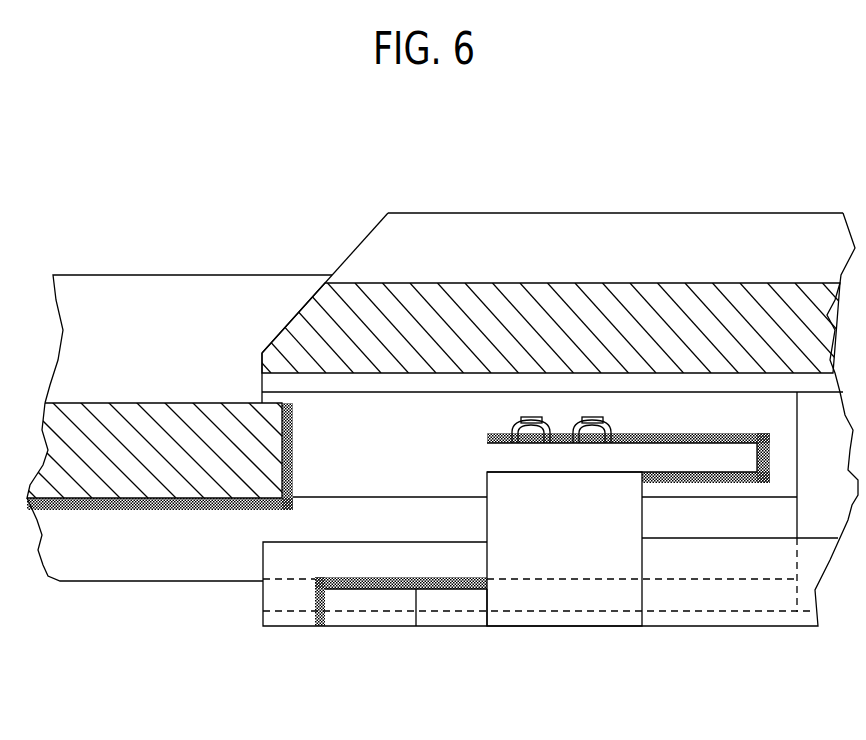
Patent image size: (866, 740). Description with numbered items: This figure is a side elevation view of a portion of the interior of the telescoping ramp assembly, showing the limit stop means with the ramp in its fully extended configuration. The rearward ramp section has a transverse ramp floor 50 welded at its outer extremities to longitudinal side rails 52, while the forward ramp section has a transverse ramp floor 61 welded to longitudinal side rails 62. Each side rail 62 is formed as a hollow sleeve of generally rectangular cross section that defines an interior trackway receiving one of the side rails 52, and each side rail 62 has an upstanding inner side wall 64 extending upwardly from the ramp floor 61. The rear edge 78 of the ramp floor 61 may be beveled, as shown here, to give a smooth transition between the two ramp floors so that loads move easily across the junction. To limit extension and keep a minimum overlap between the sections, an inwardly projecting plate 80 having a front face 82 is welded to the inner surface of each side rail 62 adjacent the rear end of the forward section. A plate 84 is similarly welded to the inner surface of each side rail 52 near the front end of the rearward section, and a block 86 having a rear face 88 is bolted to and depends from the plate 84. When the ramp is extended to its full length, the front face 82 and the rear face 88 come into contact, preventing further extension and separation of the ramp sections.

The transverse ramp floor 50 is at (118, 403).
The longitudinal side rail 52 is at (128, 284).
The transverse ramp floor 61 is at (412, 283).
The longitudinal side rail 62 is at (667, 213).
The upstanding inner side wall 64 is at (512, 242).
The rear edge 78 is at (288, 333).
The inwardly projecting plate 80 is at (403, 617).
The front face 82 is at (488, 617).
The plate 84 is at (688, 456).
The block 86 is at (568, 597).
The rear face 88 is at (465, 617).